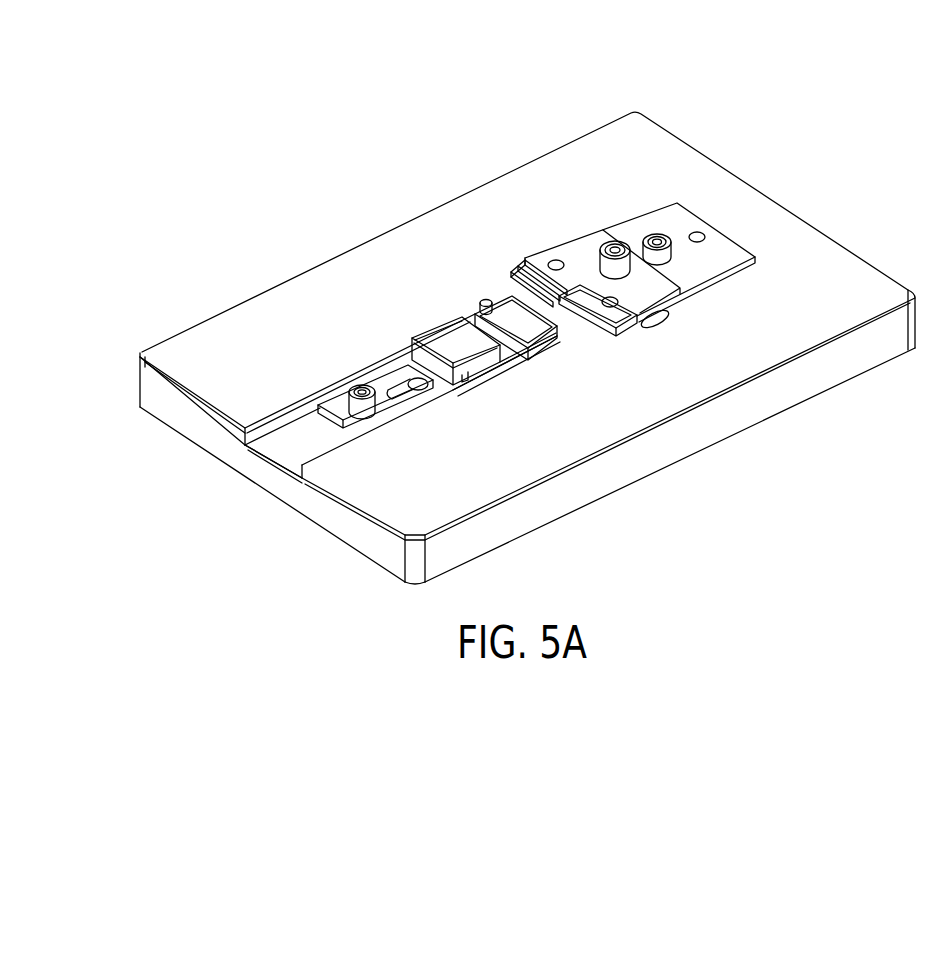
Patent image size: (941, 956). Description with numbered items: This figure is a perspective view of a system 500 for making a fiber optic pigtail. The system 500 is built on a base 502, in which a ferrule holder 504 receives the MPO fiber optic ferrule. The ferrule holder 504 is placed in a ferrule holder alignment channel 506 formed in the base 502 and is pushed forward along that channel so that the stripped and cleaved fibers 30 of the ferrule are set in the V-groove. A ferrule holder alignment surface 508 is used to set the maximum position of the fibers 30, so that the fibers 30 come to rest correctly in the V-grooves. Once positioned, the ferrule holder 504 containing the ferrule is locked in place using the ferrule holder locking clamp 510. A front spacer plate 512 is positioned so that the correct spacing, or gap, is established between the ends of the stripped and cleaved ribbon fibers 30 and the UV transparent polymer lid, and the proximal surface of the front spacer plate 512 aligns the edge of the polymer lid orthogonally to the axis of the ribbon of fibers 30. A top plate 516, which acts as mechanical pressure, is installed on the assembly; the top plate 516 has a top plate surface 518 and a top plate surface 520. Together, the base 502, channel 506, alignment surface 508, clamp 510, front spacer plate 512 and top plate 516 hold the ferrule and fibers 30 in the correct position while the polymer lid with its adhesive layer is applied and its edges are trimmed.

The system 500 is at (155, 145).
The base 502 is at (256, 297).
The ferrule holder 504 is at (449, 318).
The ferrule holder alignment channel 506 is at (286, 455).
The ferrule holder alignment surface 508 is at (560, 336).
The ferrule holder locking clamp 510 is at (412, 392).
The front spacer plate 512 is at (725, 235).
The top plate 516 is at (590, 240).
The top plate surface 518 is at (534, 265).
The top plate surface 520 is at (660, 320).
The fibers 30 is at (592, 338).